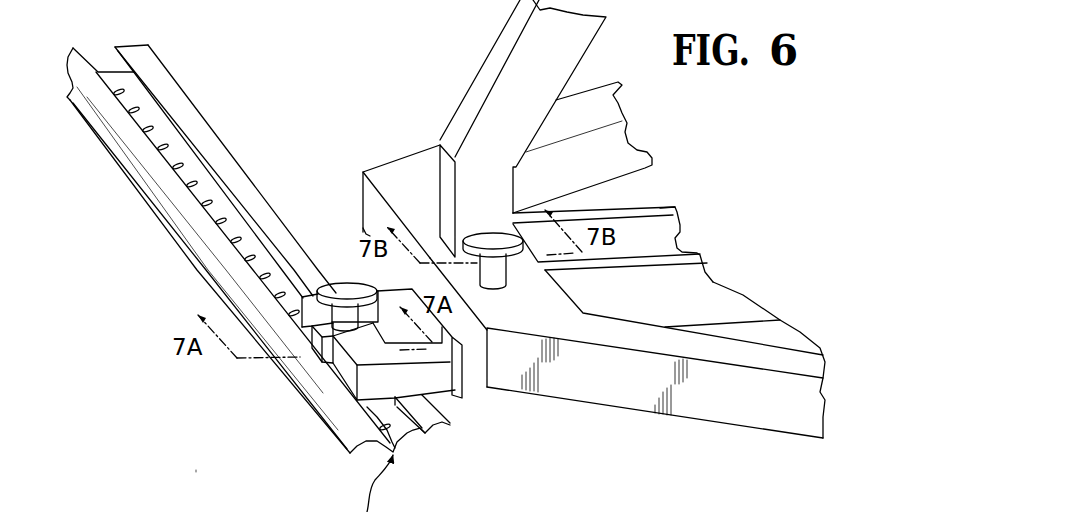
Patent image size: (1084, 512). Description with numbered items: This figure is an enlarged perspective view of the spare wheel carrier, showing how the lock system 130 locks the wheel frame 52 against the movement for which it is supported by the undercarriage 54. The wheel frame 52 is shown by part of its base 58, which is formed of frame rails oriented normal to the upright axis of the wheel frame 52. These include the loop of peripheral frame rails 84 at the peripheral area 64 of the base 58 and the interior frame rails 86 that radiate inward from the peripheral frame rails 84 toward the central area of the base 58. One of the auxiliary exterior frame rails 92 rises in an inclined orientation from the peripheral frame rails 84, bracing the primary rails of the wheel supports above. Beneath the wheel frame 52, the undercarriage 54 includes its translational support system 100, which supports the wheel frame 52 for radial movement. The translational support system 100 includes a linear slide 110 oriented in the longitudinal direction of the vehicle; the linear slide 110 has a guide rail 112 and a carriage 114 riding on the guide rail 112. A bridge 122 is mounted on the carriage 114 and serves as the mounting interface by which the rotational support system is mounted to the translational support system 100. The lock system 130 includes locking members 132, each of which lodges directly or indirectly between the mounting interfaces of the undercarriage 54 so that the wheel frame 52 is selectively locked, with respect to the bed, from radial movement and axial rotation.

The wheel frame 52 is at (408, 151).
The undercarriage 54 is at (285, 383).
The base 58 is at (377, 163).
The peripheral area 64 is at (607, 390).
The peripheral frame rails 84 is at (755, 410).
The interior frame rails 86 is at (677, 255).
The auxiliary exterior frame rails 92 is at (502, 53).
The translational support system 100 is at (335, 282).
The linear slide 110 is at (207, 415).
The guide rail 112 is at (337, 402).
The carriage 114 is at (373, 412).
The bridge 122 is at (420, 362).
The lock system 130 is at (467, 323).
The locking member 132 is at (333, 283).